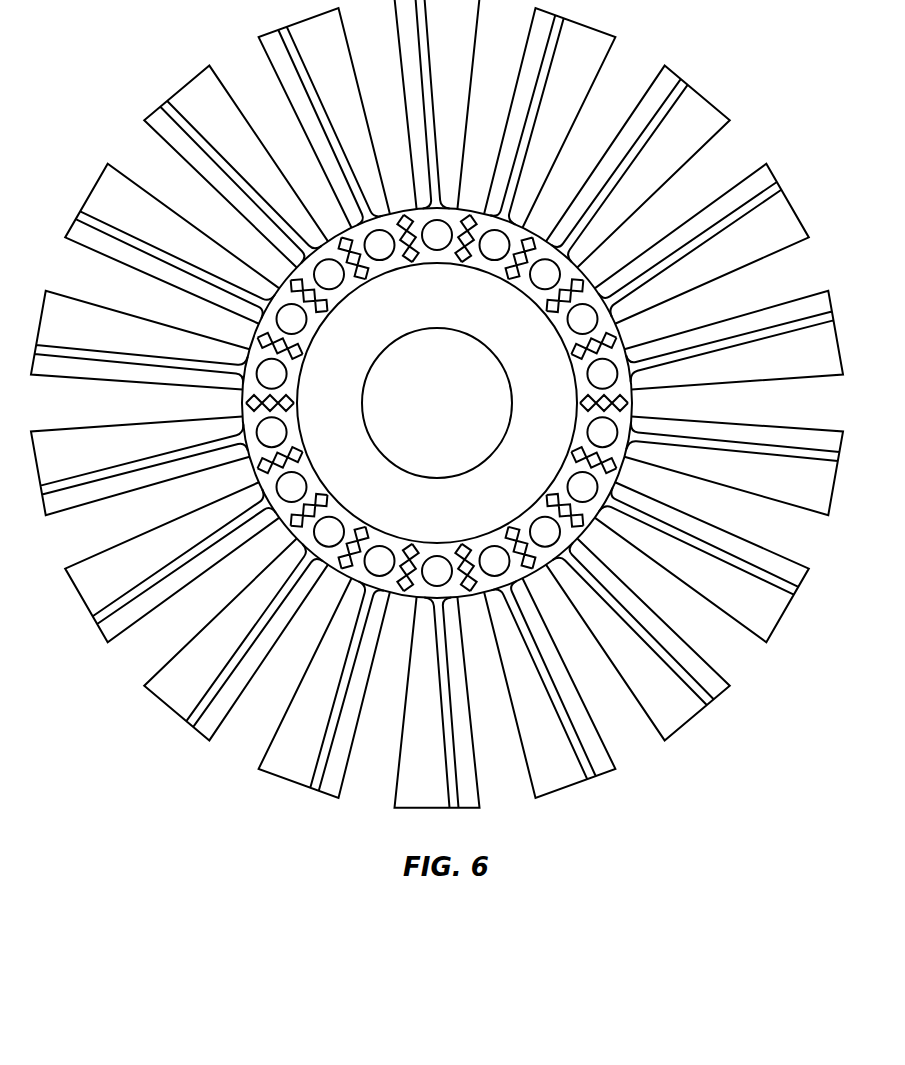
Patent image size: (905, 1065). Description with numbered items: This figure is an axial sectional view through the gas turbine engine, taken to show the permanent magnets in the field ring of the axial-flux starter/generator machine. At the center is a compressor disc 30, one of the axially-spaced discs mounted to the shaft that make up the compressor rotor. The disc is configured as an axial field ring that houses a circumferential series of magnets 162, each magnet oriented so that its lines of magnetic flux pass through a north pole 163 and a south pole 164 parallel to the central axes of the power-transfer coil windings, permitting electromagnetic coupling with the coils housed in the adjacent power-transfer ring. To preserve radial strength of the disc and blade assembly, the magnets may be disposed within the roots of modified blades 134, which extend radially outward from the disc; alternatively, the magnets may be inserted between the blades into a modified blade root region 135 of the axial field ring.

The compressor disc 30 is at (356, 369).
The modified blade 134 is at (705, 108).
The modified blade root region 135 is at (558, 452).
The magnet 162 is at (517, 298).
The north pole 163 is at (591, 372).
The south pole 164 is at (571, 319).